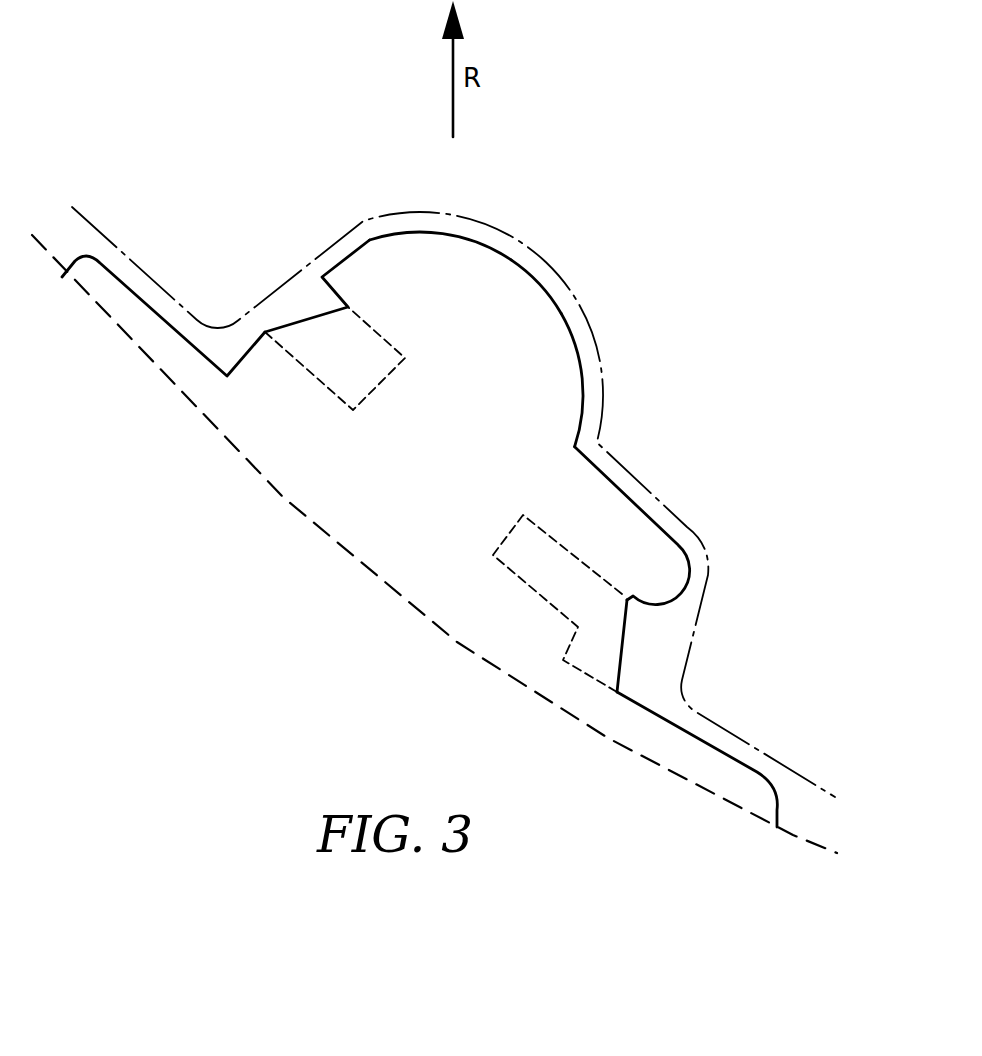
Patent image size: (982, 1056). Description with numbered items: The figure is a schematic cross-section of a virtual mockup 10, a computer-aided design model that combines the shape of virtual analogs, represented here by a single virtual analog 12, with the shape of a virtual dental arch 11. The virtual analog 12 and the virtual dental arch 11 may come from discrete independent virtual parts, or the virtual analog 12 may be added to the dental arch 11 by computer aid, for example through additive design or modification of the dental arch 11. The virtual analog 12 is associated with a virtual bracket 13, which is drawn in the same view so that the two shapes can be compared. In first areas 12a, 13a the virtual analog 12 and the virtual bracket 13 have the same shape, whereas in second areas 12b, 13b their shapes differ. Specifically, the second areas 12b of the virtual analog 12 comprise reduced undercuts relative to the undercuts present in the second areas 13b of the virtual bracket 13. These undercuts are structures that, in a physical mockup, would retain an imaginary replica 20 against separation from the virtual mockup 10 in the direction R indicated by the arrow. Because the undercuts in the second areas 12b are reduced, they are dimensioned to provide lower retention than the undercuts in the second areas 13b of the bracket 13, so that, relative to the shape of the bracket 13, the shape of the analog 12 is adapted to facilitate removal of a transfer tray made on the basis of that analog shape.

The virtual mockup 10 is at (640, 172).
The virtual dental arch 11 is at (793, 835).
The virtual analog 12 is at (555, 347).
The first area of the virtual analog 12a is at (488, 247).
The second area of the virtual analog 12b is at (302, 318).
The virtual bracket 13 is at (688, 643).
The first area of the virtual bracket 13a is at (533, 275).
The second area of the virtual bracket 13b is at (313, 378).
The imaginary replica 20 is at (805, 778).